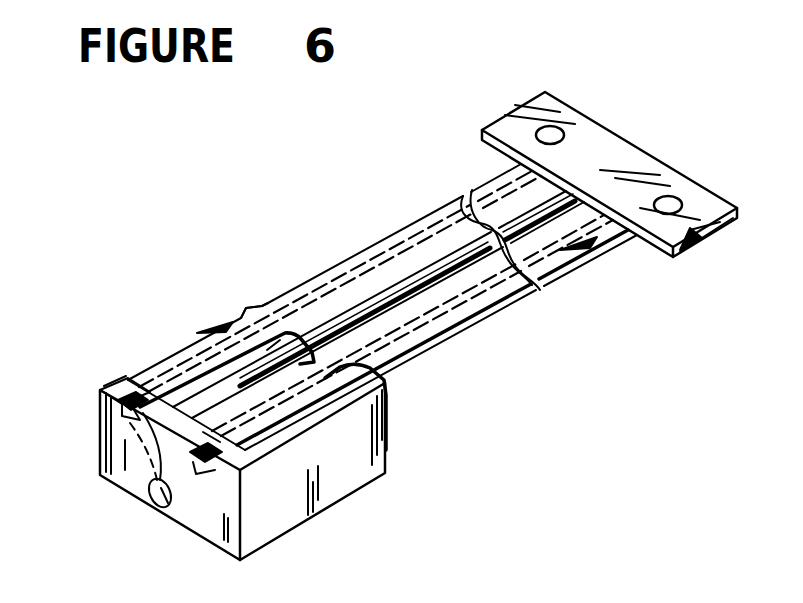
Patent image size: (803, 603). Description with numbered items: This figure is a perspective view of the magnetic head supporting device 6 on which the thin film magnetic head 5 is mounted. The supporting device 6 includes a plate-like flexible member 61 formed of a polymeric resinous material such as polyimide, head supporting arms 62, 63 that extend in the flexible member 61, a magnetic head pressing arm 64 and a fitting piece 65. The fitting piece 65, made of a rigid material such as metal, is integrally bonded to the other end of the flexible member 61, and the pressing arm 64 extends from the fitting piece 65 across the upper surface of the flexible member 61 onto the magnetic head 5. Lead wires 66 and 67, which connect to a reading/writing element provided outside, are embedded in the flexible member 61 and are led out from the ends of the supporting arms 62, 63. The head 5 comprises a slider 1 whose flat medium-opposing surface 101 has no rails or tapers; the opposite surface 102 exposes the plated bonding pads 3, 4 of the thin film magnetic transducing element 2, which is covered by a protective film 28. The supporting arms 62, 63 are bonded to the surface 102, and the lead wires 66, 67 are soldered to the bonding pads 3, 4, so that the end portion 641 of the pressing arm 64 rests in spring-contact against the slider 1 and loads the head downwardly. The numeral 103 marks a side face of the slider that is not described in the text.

The slider 1 is at (388, 385).
The thin film magnetic transducing element 2 is at (158, 505).
The bonding pad 3 is at (127, 386).
The bonding pad 4 is at (333, 385).
The thin film magnetic head 5 is at (391, 460).
The magnetic head supporting device 6 is at (378, 236).
The protective film 28 is at (110, 389).
The flexible member 61 is at (347, 263).
The head supporting arm 62 is at (207, 360).
The head supporting arm 63 is at (330, 384).
The magnetic head pressing arm 64 is at (330, 337).
The fitting piece 65 is at (625, 166).
The lead wire 66 is at (118, 410).
The lead wire 67 is at (204, 470).
The medium-opposing surface 101 is at (330, 516).
The surface 102 is at (235, 317).
The side face 103 is at (125, 471).
The end portion of the magnetic head pressing arm 641 is at (335, 435).